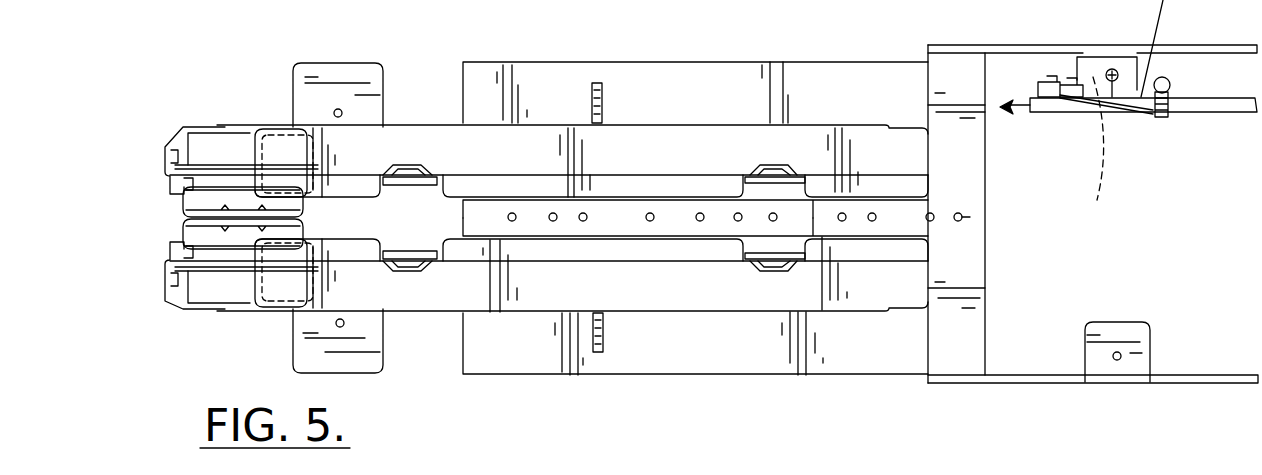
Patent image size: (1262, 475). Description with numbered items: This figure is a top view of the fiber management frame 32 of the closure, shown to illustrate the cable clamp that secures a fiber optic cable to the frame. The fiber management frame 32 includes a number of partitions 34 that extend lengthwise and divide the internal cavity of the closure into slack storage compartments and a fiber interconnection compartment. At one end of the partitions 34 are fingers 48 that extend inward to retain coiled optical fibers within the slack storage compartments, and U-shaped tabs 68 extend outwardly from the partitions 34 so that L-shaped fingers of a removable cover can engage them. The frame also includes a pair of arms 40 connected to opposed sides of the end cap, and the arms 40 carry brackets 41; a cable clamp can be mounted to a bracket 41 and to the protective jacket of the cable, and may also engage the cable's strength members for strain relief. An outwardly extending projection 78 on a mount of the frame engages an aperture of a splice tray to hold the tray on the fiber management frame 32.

The fiber management frame 32 is at (1143, 240).
The partitions 34 is at (233, 167).
The arms 40 is at (1170, 47).
The brackets 41 is at (1104, 322).
The fingers 48 is at (203, 128).
The U-shaped tabs 68 is at (413, 163).
The outwardly extending projection 78 is at (602, 103).